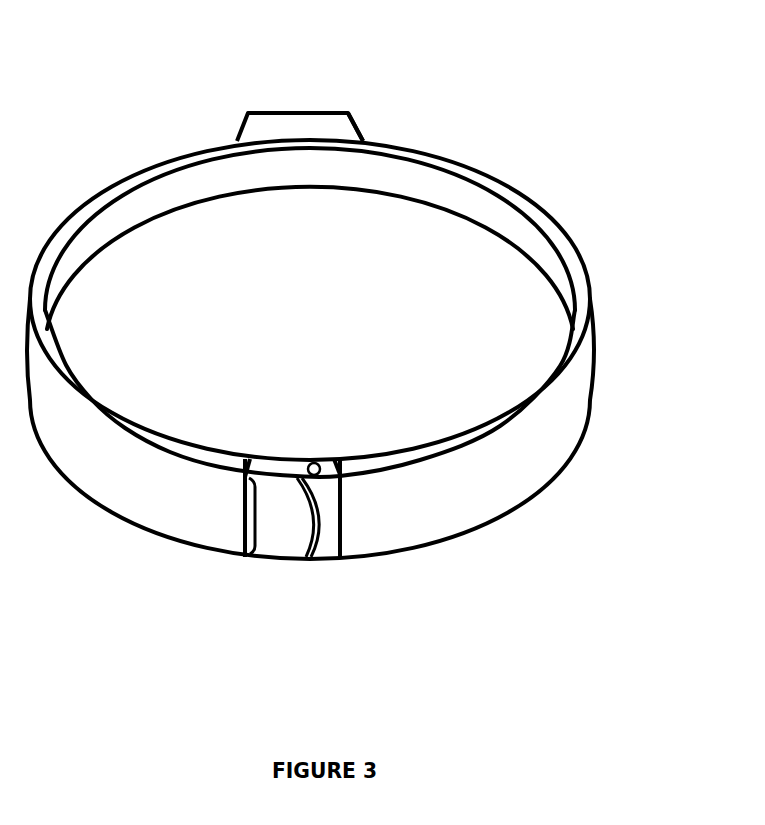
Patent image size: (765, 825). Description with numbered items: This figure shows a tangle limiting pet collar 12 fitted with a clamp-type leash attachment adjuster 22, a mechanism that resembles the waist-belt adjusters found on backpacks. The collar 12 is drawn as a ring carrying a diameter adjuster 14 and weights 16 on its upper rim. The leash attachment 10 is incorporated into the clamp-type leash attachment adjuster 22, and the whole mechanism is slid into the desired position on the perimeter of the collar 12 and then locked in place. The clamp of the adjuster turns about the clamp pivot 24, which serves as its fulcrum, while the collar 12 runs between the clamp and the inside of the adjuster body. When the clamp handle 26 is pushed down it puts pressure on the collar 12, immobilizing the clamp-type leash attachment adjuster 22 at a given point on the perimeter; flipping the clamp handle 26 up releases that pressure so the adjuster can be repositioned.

The leash attachment 10 is at (313, 520).
The collar 12 is at (540, 216).
The diameter adjuster 14 is at (257, 103).
The weights 16 is at (360, 131).
The clamp-type leash attachment adjuster 22 is at (288, 588).
The clamp pivot 24 is at (318, 458).
The clamp handle 26 is at (255, 540).